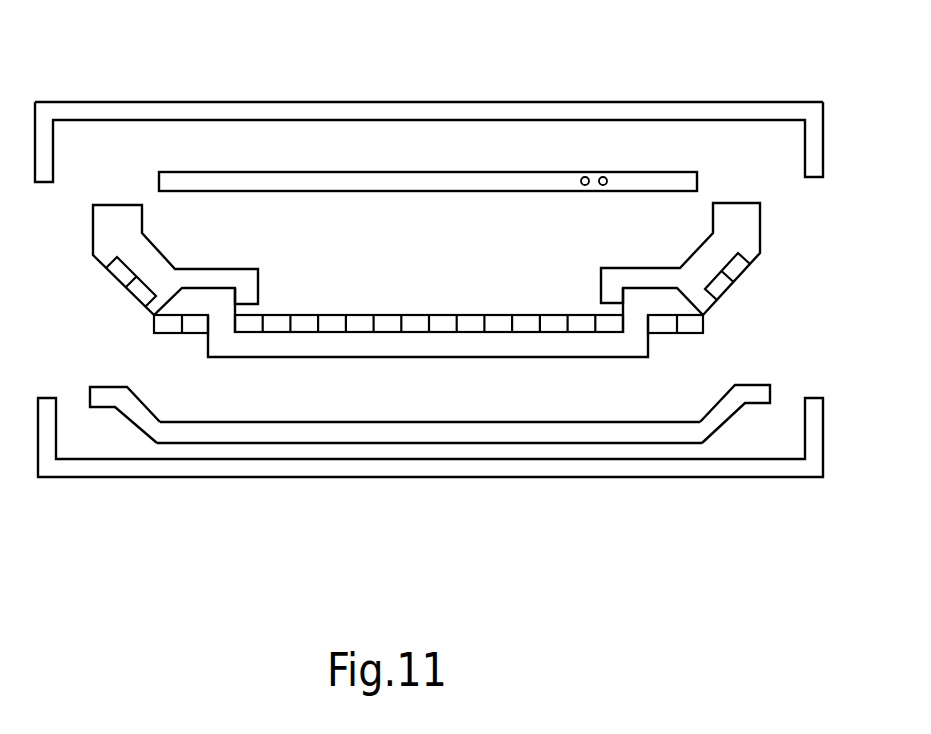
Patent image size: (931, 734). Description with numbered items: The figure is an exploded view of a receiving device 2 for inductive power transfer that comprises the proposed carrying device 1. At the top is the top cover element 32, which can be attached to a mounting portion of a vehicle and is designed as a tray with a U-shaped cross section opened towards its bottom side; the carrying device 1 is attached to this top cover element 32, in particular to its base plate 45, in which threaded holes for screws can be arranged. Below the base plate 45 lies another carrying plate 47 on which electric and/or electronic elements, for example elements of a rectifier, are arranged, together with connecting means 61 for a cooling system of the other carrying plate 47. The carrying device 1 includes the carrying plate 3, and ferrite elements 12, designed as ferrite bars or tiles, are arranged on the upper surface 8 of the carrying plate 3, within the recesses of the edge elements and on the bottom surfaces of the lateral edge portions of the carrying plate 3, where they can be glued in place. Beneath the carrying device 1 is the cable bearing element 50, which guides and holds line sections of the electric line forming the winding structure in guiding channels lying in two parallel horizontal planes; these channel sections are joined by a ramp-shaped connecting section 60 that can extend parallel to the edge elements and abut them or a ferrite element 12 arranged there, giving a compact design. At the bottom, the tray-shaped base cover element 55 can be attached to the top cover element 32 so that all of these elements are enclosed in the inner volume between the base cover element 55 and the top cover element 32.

The carrying device 1 is at (104, 222).
The receiving device 2 is at (113, 528).
The carrying plate 3 is at (392, 347).
The upper surface 8 is at (443, 328).
The ferrite elements 12 is at (147, 290).
The top cover element 32 is at (435, 111).
The base plate 45 is at (338, 102).
The other carrying plate 47 is at (670, 178).
The cable bearing element 50 is at (456, 398).
The base cover element 55 is at (728, 467).
The connecting section 60 is at (150, 408).
The connecting means 61 is at (602, 177).